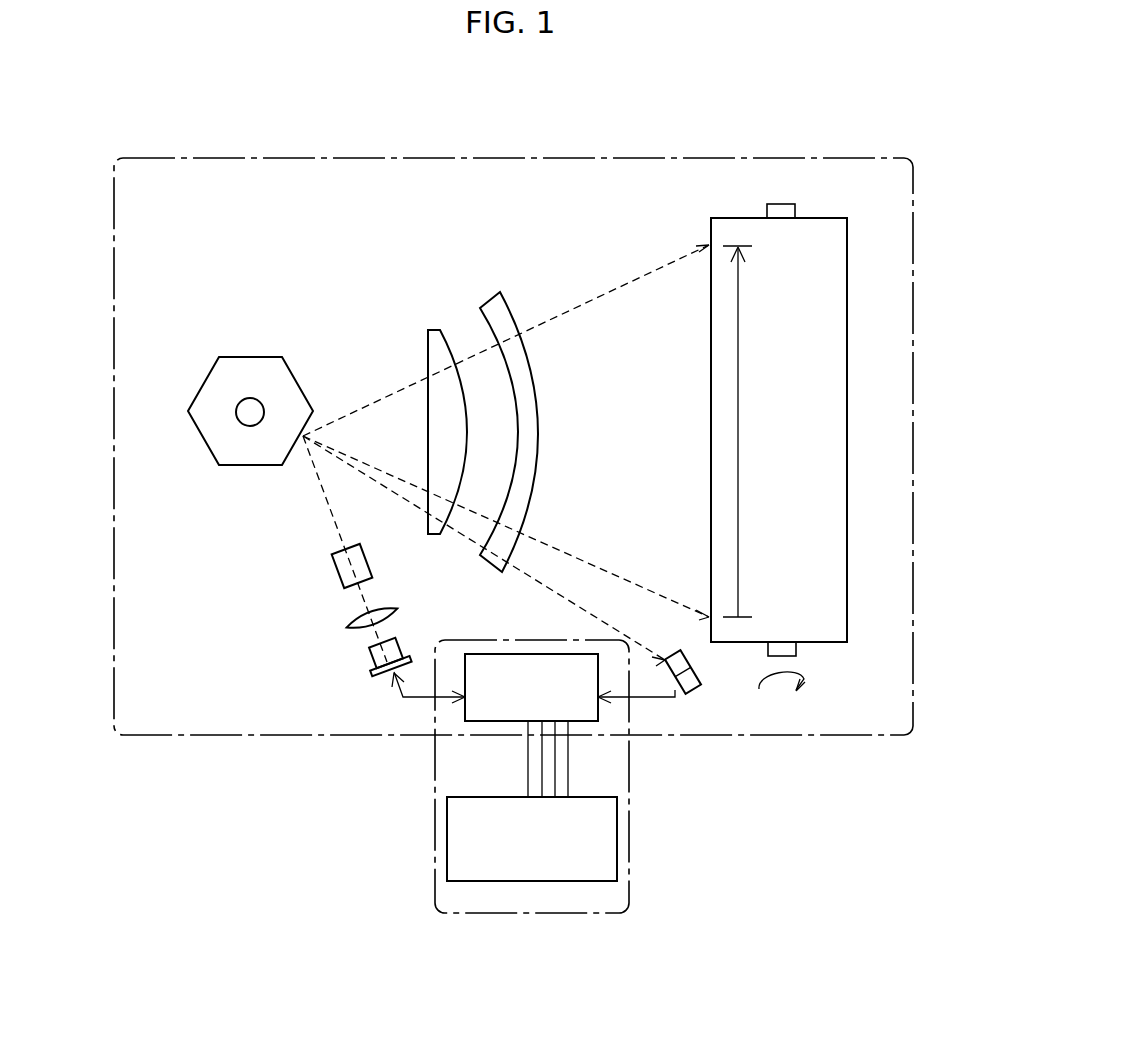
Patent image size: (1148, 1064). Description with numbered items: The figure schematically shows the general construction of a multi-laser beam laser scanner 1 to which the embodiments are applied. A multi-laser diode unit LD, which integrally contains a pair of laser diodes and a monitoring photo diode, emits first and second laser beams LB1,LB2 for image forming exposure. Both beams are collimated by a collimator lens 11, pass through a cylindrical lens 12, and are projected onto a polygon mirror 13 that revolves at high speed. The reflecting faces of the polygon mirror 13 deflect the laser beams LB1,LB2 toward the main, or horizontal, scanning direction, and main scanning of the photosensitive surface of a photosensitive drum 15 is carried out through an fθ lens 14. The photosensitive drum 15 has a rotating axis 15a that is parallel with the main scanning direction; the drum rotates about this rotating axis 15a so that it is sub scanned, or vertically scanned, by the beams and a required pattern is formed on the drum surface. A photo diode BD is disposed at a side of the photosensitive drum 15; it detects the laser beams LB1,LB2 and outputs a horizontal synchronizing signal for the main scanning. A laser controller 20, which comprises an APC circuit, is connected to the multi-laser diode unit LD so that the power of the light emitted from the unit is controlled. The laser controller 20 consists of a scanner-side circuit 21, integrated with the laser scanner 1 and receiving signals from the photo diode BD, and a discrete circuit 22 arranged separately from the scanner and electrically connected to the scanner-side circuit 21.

The laser scanner 1 is at (455, 156).
The collimator lens 11 is at (347, 627).
The cylindrical lens 12 is at (335, 568).
The polygon mirror 13 is at (252, 367).
The fθ lens 14 is at (495, 272).
The photosensitive drum 15 is at (829, 426).
The rotating axis 15a is at (797, 648).
The laser controller 20 is at (629, 792).
The scanner-side circuit 21 is at (531, 687).
The discrete circuit 22 is at (532, 801).
The multi-laser diode unit LD is at (370, 656).
The photo diode BD is at (692, 676).
The first and second laser beams LB1,LB2 is at (318, 477).